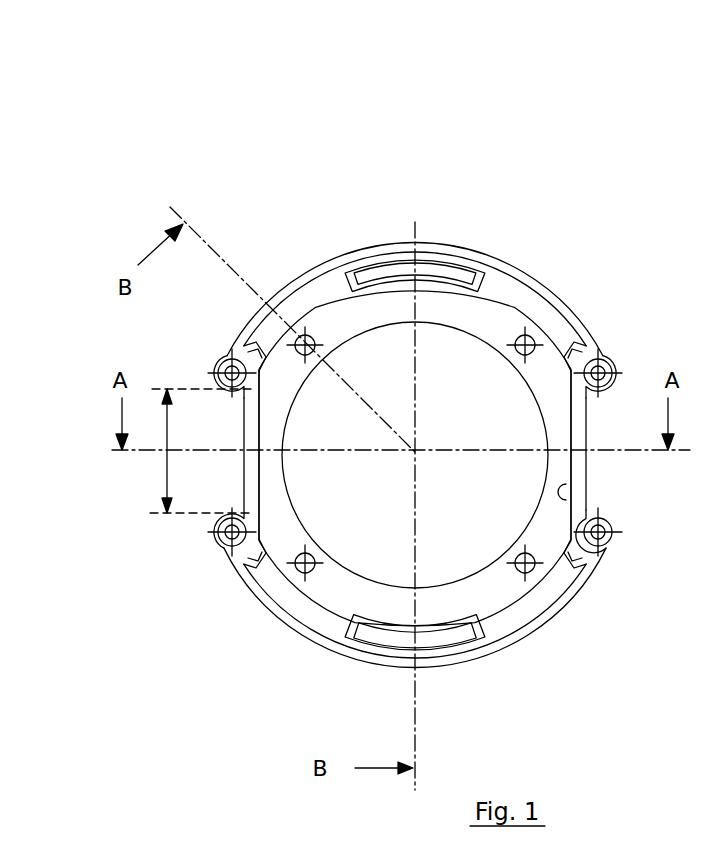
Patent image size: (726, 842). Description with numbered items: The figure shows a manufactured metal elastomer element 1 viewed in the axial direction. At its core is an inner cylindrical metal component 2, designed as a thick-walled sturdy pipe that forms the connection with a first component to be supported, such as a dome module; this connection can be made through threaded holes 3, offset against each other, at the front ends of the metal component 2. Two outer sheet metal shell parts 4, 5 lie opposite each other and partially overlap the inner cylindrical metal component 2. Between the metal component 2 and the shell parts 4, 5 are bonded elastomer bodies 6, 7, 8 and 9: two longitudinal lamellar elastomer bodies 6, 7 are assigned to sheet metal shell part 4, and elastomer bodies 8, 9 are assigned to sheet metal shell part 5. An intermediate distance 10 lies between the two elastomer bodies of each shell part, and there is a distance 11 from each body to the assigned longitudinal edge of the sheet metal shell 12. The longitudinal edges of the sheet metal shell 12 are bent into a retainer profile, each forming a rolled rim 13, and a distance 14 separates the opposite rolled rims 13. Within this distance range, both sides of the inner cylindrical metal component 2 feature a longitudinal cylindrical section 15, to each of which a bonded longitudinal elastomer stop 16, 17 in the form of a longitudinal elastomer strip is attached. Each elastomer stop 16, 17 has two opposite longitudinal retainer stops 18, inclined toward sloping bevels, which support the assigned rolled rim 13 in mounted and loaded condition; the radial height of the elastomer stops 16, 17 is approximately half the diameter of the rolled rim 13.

The metal elastomer element 1 is at (502, 182).
The inner cylindrical metal component 2 is at (493, 316).
The threaded holes 3 is at (300, 338).
The sheet metal shell part 4 is at (339, 256).
The sheet metal shell part 5 is at (328, 648).
The elastomer body 6 is at (327, 288).
The elastomer body 7 is at (547, 313).
The elastomer body 8 is at (291, 606).
The elastomer body 9 is at (533, 612).
The intermediate distance 10 is at (448, 645).
The distance 11 is at (587, 356).
The sheet metal shell 12 is at (640, 379).
The rolled rim 13 is at (224, 362).
The distance 14 is at (167, 470).
The longitudinal cylindrical section 15 is at (583, 506).
The elastomer stop 16 is at (582, 473).
The elastomer stop 17 is at (245, 476).
The longitudinal retainer stop 18 is at (617, 518).